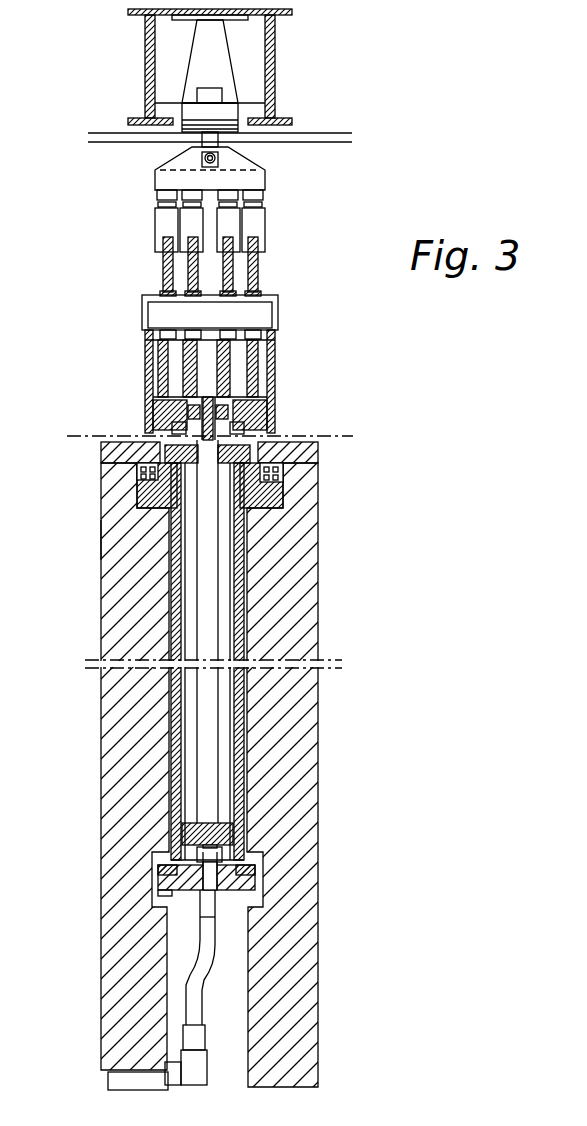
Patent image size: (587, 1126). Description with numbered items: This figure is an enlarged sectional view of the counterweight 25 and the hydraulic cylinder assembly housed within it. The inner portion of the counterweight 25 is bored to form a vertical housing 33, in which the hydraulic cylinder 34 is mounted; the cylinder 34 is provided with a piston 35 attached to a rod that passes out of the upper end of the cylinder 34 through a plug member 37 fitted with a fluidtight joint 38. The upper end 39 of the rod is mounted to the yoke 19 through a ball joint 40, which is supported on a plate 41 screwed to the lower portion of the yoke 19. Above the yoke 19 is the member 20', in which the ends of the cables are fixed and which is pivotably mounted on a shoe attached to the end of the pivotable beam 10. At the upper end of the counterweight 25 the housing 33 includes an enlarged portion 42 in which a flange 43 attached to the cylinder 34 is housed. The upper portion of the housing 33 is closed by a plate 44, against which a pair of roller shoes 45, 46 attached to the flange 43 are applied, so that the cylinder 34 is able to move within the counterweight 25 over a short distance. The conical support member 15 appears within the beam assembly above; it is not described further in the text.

The pivotable beam 10 is at (275, 60).
The conical support member 15 is at (190, 73).
The member 20' is at (235, 173).
The yoke 19 is at (257, 408).
The ball joint 40 is at (197, 420).
The plate 41 is at (185, 435).
The plate 44 is at (108, 455).
The plug member 37 is at (257, 448).
The counterweight 25 is at (300, 614).
The flange 43 is at (148, 497).
The roller shoe 45 is at (140, 468).
The fluidtight joint 38 is at (283, 470).
The roller shoe 46 is at (280, 472).
The enlarged portion 42 is at (145, 520).
The hydraulic cylinder 34 is at (175, 600).
The vertical housing 33 is at (250, 740).
The upper end 39 is at (207, 488).
The piston 35 is at (230, 832).